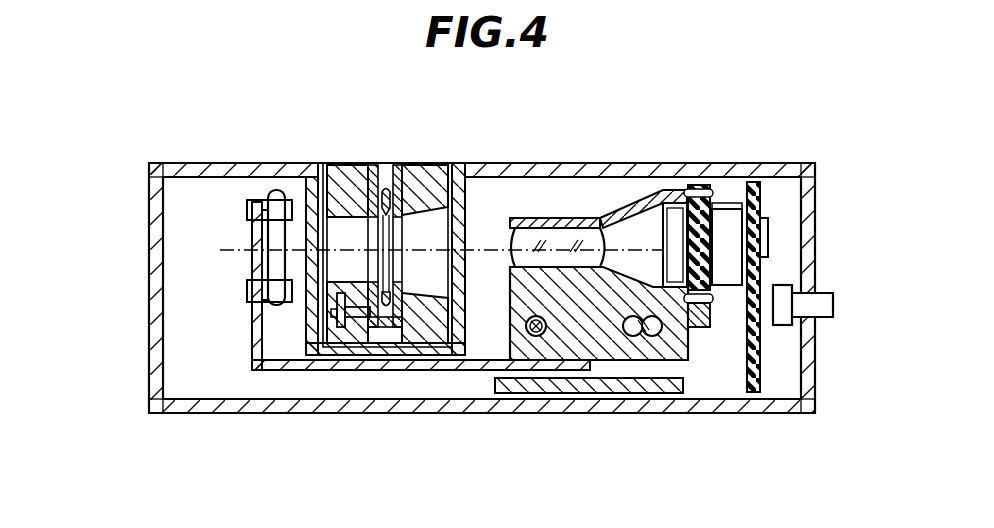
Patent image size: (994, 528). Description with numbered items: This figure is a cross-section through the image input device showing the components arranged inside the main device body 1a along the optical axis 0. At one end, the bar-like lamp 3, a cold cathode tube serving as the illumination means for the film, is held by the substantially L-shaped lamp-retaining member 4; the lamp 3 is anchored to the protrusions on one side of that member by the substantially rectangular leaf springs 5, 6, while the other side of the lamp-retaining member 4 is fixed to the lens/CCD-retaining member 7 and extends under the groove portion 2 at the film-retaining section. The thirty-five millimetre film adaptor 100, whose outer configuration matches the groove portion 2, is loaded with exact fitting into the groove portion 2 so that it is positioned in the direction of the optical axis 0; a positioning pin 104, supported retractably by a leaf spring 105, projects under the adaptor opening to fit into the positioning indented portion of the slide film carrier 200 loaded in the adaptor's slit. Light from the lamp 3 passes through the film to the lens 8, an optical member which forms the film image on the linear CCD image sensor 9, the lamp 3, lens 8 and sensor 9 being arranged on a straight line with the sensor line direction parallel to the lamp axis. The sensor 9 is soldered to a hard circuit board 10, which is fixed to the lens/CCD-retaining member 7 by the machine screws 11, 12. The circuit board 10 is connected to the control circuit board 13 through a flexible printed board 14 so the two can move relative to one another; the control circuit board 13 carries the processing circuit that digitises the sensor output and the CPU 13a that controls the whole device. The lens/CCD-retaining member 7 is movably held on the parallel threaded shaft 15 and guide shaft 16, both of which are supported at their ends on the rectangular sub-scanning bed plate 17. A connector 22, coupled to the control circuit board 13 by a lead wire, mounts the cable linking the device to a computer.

The main device body 1a is at (150, 235).
The optical axis 0 is at (238, 250).
The groove portion 2 is at (327, 200).
The bar-like lamp 3 is at (280, 192).
The lamp-retaining member 4 is at (250, 330).
The leaf spring 5 is at (263, 212).
The leaf spring 6 is at (250, 292).
The lens/CCD-retaining member 7 is at (623, 330).
The lens 8 is at (557, 232).
The linear CCD image sensor 9 is at (658, 222).
The circuit board 10 is at (700, 186).
The machine screw 11 is at (712, 208).
The machine screw 12 is at (717, 302).
The control circuit board 13 is at (754, 200).
The CPU 13a is at (769, 232).
The flexible printed board 14 is at (727, 204).
The threaded shaft 15 is at (527, 322).
The guide shaft 16 is at (633, 327).
The sub-scanning bed plate 17 is at (663, 390).
The connector 22 is at (820, 292).
The 35 mm film adaptor 100 is at (350, 165).
The positioning pin 104 is at (358, 318).
The leaf spring 105 is at (335, 322).
The slide film carrier 200 is at (400, 165).